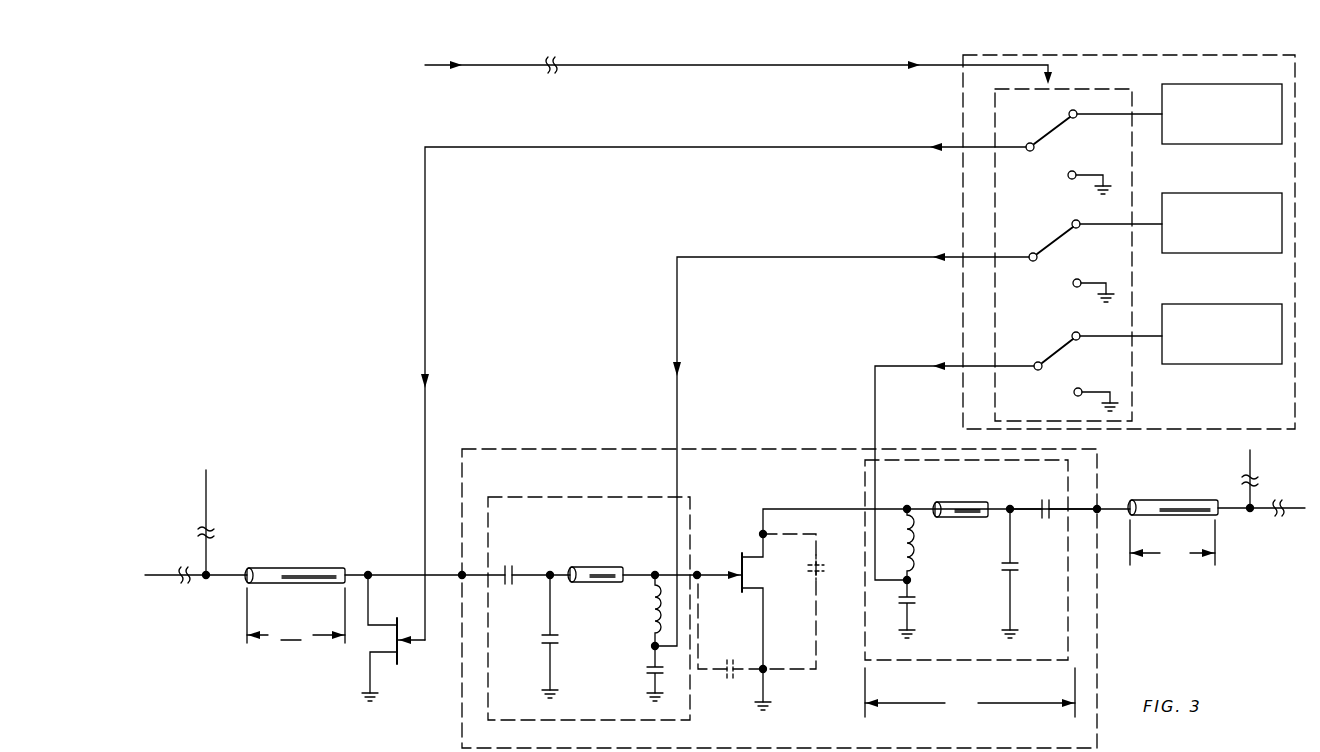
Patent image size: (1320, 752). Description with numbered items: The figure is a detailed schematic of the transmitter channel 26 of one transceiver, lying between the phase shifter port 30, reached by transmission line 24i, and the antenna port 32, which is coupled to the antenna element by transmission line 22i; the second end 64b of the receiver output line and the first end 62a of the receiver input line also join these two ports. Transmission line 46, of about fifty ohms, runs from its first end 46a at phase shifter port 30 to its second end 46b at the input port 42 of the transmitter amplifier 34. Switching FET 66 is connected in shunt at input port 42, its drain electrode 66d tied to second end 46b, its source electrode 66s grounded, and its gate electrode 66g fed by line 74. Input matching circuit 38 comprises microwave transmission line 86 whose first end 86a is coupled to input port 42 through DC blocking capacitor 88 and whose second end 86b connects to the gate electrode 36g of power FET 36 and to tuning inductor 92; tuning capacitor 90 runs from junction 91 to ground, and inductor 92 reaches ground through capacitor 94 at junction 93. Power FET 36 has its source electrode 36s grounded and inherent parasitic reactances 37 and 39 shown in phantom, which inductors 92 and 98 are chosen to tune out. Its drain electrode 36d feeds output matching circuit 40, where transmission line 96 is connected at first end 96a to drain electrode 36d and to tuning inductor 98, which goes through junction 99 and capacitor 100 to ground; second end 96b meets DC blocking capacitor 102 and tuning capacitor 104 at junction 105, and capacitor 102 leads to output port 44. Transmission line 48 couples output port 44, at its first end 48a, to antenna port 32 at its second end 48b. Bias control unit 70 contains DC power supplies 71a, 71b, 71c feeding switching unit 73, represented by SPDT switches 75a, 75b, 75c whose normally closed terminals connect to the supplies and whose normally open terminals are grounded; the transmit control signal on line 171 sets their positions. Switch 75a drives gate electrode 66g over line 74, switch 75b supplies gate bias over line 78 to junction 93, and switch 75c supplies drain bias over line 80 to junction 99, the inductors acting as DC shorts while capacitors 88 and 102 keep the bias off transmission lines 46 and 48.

The transmitter channel 26 is at (290, 154).
The transmit control signal line 171 is at (441, 66).
The line 74 is at (704, 391).
The line 78 is at (677, 308).
The line 80 is at (875, 398).
The bias control unit 70 is at (963, 213).
The switching unit 73 is at (1090, 89).
The DC power supply 71a is at (1215, 84).
The DC power supply 71b is at (1218, 193).
The DC power supply 71c is at (1222, 304).
The SPDT switch 75a is at (1063, 129).
The SPDT switch 75b is at (1066, 239).
The SPDT switch 75c is at (1069, 349).
The transmission line 24i is at (168, 568).
The phase shifter port 30 is at (205, 580).
The second end of transmission line 64 64b is at (206, 494).
The transmission line 46 is at (300, 567).
The first end of transmission line 46 46a is at (247, 573).
The second end of transmission line 46 46b is at (345, 569).
The switching FET 66 is at (360, 648).
The drain electrode 66d is at (370, 617).
The gate electrode 66g is at (410, 645).
The source electrode 66s is at (376, 692).
The transmitter amplifier 34 is at (510, 449).
The transmitter amplifier input port 42 is at (462, 572).
The input matching circuit 38 is at (510, 497).
The DC blocking capacitor 88 is at (513, 581).
The junction 91 is at (548, 572).
The tuning capacitor 90 is at (553, 636).
The microwave transmission line 86 is at (600, 566).
The first end of transmission line 86 86a is at (570, 571).
The second end of transmission line 86 86b is at (627, 571).
The tuning inductor 92 is at (652, 610).
The junction 93 is at (652, 646).
The capacitor 94 is at (655, 673).
The power FET 36 is at (735, 513).
The drain electrode 36d is at (745, 556).
The gate electrode 36g is at (706, 578).
The source electrode 36s is at (758, 590).
The parasitic reactance 37 is at (738, 683).
The parasitic reactance 39 is at (822, 565).
The output matching circuit 40 is at (865, 476).
The first end of transmission line 96 96a is at (935, 505).
The tuning inductor 98 is at (913, 553).
The junction 99 is at (911, 581).
The capacitor 100 is at (914, 602).
The microwave transmission line 96 is at (966, 518).
The second end of transmission line 96 96b is at (1000, 491).
The junction 105 is at (1011, 506).
The DC blocking capacitor 102 is at (1051, 512).
The tuning capacitor 104 is at (1018, 567).
The transmitter amplifier output port 44 is at (1098, 506).
The transmission line 48 is at (1175, 498).
The first end of transmission line 48 48a is at (1128, 512).
The second end of transmission line 48 48b is at (1235, 490).
The antenna port 32 is at (1255, 505).
The first end of transmission line 62 62a is at (1250, 460).
The transmission line 22i is at (1290, 512).